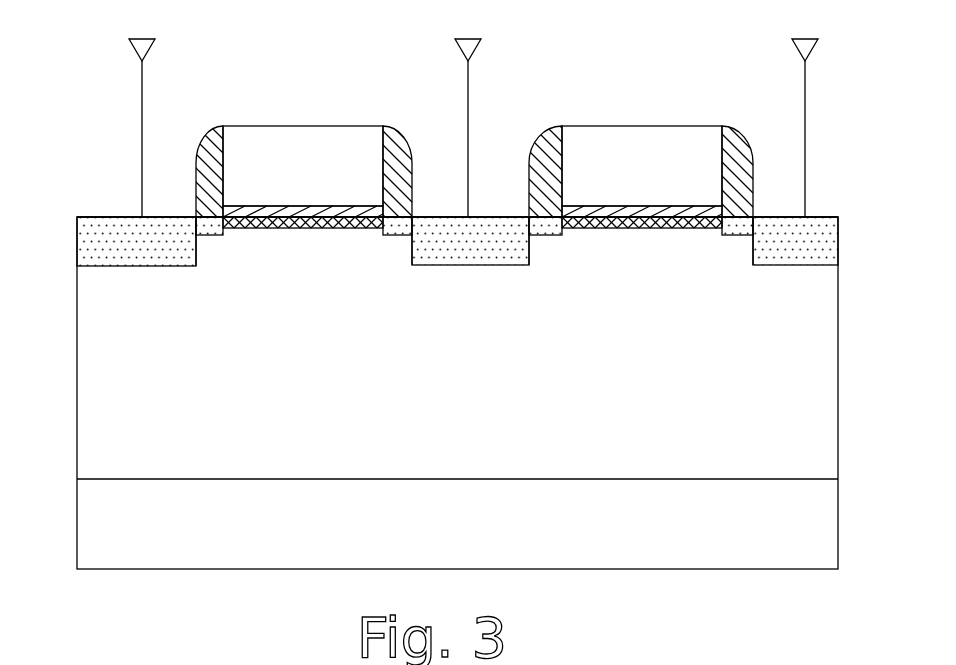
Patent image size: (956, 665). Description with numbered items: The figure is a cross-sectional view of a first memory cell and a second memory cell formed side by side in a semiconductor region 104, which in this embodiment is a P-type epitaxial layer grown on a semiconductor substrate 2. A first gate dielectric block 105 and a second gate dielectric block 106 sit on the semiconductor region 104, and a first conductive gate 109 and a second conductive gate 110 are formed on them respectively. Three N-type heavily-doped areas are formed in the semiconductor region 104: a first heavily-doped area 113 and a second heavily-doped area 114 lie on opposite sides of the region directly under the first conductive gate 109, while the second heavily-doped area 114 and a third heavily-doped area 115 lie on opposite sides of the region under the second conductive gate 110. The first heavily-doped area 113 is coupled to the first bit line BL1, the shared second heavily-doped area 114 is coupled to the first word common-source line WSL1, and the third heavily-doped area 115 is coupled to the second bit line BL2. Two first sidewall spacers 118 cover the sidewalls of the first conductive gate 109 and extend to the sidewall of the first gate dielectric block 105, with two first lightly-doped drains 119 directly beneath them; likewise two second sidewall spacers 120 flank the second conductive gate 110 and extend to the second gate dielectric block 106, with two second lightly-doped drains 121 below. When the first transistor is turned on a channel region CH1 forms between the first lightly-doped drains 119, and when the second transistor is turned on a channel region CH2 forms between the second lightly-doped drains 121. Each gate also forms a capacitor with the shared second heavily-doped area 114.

The semiconductor substrate 2 is at (216, 565).
The semiconductor region 104 is at (352, 472).
The first gate dielectric block 105 is at (277, 210).
The second gate dielectric block 106 is at (648, 210).
The first conductive gate 109 is at (339, 134).
The second conductive gate 110 is at (622, 133).
The first heavily-doped area 113 is at (122, 268).
The second heavily-doped area 114 is at (480, 268).
The third heavily-doped area 115 is at (806, 262).
The first sidewall spacers 118 is at (210, 148).
The first lightly-doped drains 119 is at (217, 237).
The second sidewall spacers 120 is at (547, 144).
The second lightly-doped drains 121 is at (548, 237).
The channel region CH1 is at (300, 226).
The channel region CH2 is at (625, 229).
The first bit line BL1 is at (132, 112).
The first word common-source line WSL1 is at (468, 112).
The second bit line BL2 is at (796, 112).